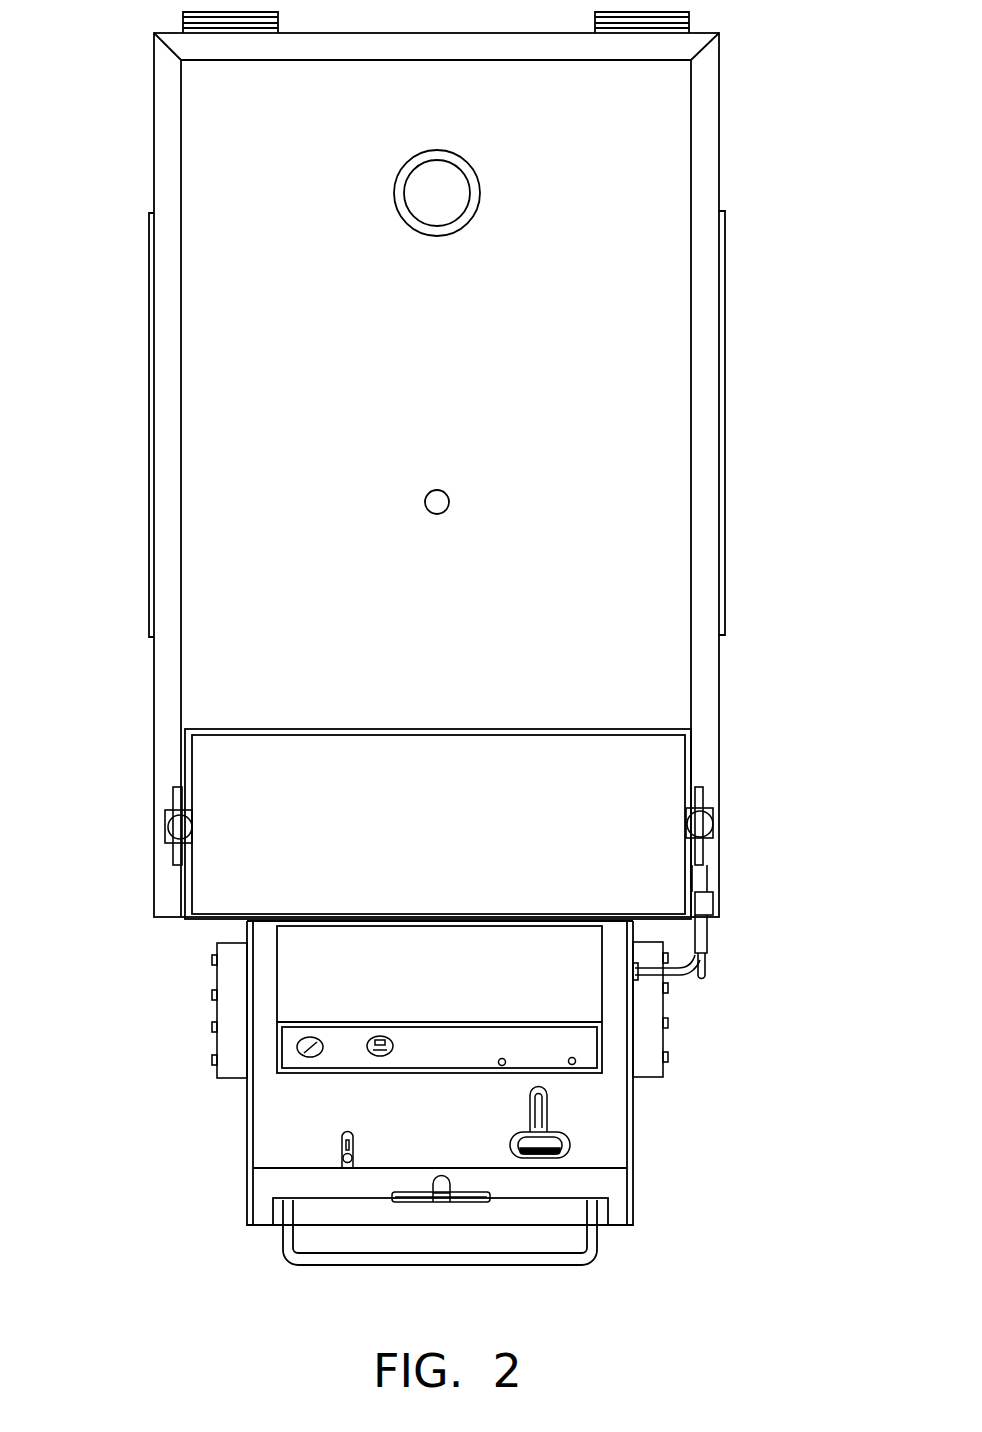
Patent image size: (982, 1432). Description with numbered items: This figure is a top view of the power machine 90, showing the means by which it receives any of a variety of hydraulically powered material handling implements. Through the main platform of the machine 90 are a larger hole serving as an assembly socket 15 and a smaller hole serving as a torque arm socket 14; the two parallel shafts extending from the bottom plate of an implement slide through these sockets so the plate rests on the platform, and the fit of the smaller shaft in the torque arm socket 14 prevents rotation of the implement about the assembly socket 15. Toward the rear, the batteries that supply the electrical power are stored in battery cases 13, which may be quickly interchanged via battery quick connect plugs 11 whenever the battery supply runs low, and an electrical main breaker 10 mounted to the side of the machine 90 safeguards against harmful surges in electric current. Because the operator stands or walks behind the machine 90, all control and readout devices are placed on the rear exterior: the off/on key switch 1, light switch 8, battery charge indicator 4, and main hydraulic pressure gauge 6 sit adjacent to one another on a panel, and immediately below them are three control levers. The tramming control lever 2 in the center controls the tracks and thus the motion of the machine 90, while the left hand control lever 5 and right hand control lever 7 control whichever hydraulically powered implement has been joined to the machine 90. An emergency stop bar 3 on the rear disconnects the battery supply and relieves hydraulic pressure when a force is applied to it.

The machine 90 is at (133, 632).
The assembly socket 15 is at (450, 187).
The torque arm socket 14 is at (440, 502).
The battery case 13 is at (655, 745).
The battery quick connect plug 11 is at (705, 938).
The electrical main breaker 10 is at (638, 1021).
The main hydraulic pressure gauge 6 is at (313, 1058).
The battery charge indicator 4 is at (378, 1058).
The off/on key switch 1 is at (502, 1066).
The light switch 8 is at (572, 1065).
The left hand control lever 5 is at (352, 1158).
The right hand control lever 7 is at (568, 1143).
The tramming control lever 2 is at (443, 1202).
The emergency stop bar 3 is at (403, 1258).